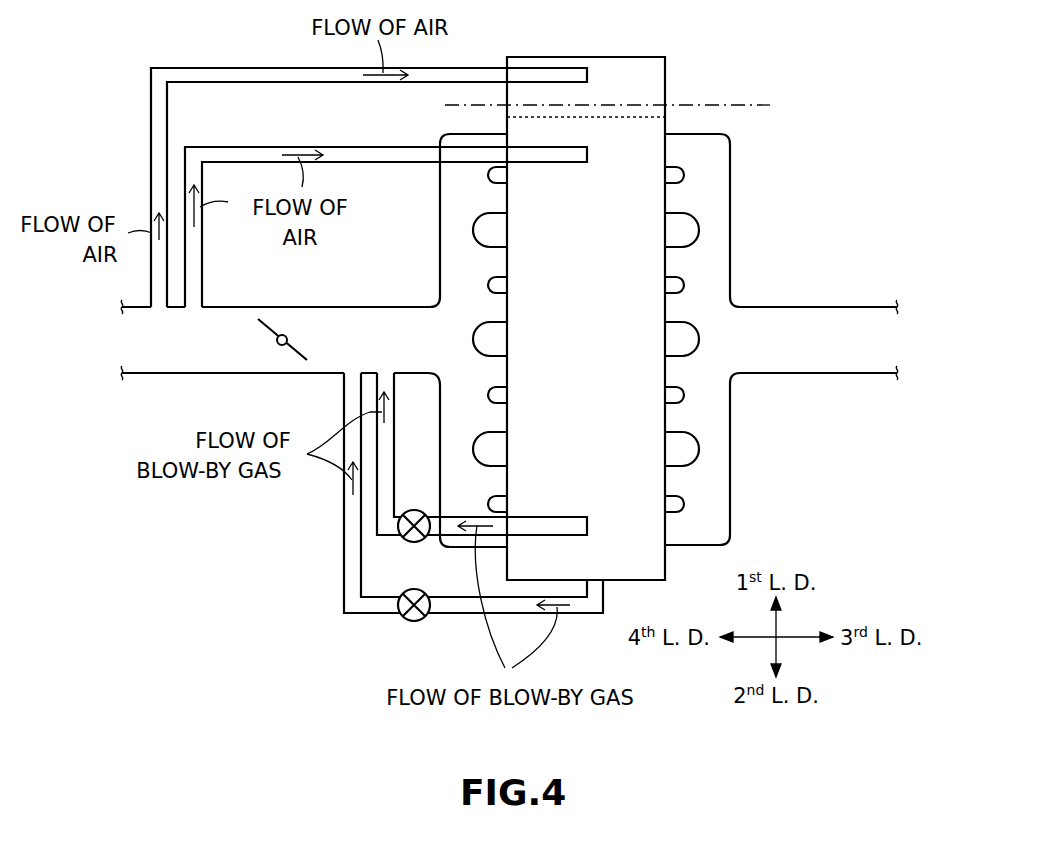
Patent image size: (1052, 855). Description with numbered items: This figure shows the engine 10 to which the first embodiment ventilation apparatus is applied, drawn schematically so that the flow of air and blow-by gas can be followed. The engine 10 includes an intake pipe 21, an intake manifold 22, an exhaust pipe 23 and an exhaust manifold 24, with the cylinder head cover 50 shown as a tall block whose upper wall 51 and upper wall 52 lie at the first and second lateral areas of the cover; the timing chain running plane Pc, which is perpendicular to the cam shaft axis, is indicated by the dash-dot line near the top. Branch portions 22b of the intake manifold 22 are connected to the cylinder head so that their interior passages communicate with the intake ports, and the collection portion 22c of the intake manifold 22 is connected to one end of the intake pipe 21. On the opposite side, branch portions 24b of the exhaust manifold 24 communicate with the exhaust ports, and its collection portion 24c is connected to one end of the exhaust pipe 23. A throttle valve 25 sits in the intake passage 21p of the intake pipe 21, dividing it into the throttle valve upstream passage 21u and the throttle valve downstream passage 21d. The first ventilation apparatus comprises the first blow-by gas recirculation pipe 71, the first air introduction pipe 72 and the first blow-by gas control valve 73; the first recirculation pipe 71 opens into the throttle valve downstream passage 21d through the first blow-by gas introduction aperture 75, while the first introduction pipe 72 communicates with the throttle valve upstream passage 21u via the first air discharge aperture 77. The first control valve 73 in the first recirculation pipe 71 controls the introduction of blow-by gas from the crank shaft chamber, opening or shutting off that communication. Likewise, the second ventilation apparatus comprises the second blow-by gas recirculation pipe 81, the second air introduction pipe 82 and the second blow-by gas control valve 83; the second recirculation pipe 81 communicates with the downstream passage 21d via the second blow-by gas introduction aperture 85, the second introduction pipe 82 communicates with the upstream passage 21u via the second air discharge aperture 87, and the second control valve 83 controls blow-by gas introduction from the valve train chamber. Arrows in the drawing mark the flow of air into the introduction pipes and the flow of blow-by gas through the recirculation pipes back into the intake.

The engine 10 is at (658, 37).
The cylinder head cover 50 is at (587, 48).
The upper wall 51 is at (619, 92).
The upper wall 52 is at (566, 444).
The timing chain running plane Pc is at (753, 103).
The intake pipe 21 is at (307, 307).
The throttle valve upstream passage 21u is at (208, 364).
The throttle valve downstream passage 21d is at (347, 344).
The intake passage 21p is at (163, 373).
The intake manifold 22 is at (440, 197).
The branch portions 22b is at (500, 308).
The collection portion 22c is at (430, 303).
The exhaust pipe 23 is at (822, 307).
The exhaust manifold 24 is at (730, 218).
The branch portions 24b is at (663, 415).
The collection portion 24c is at (737, 305).
The throttle valve 25 is at (293, 360).
The first blow-by gas recirculation pipe 71 is at (350, 613).
The first air introduction pipe 72 is at (250, 68).
The first blow-by gas control valve 73 is at (413, 621).
The first blow-by gas introduction aperture 75 is at (358, 372).
The first air discharge aperture 77 is at (158, 310).
The second blow-by gas recirculation pipe 81 is at (397, 412).
The second air introduction pipe 82 is at (323, 147).
The second blow-by gas control valve 83 is at (414, 510).
The second blow-by gas introduction aperture 85 is at (390, 372).
The second air discharge aperture 87 is at (193, 310).